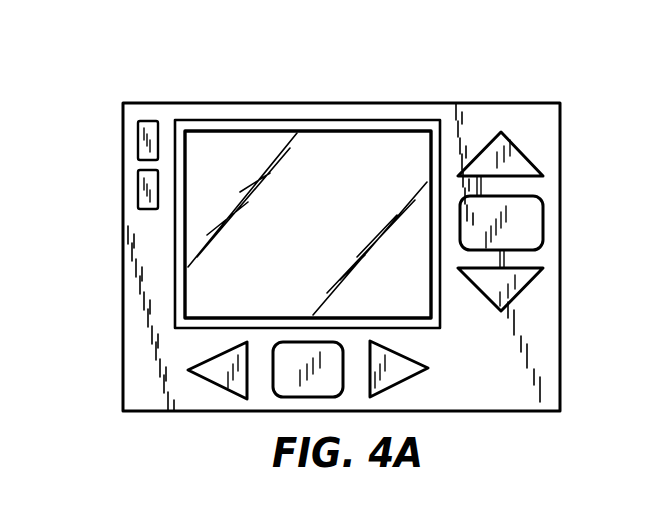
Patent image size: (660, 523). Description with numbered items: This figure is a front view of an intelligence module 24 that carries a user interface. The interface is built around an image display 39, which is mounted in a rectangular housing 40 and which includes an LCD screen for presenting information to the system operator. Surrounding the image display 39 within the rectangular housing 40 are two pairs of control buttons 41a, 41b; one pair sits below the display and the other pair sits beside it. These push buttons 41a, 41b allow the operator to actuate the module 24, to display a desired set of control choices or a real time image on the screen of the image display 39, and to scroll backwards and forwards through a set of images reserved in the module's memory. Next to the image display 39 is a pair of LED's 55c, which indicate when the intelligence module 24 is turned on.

The intelligence module 24 is at (135, 84).
The image display 39 is at (265, 151).
The rectangular housing 40 is at (122, 288).
The control buttons 41a is at (370, 392).
The control buttons 41b is at (530, 290).
The LED's 55c is at (138, 190).